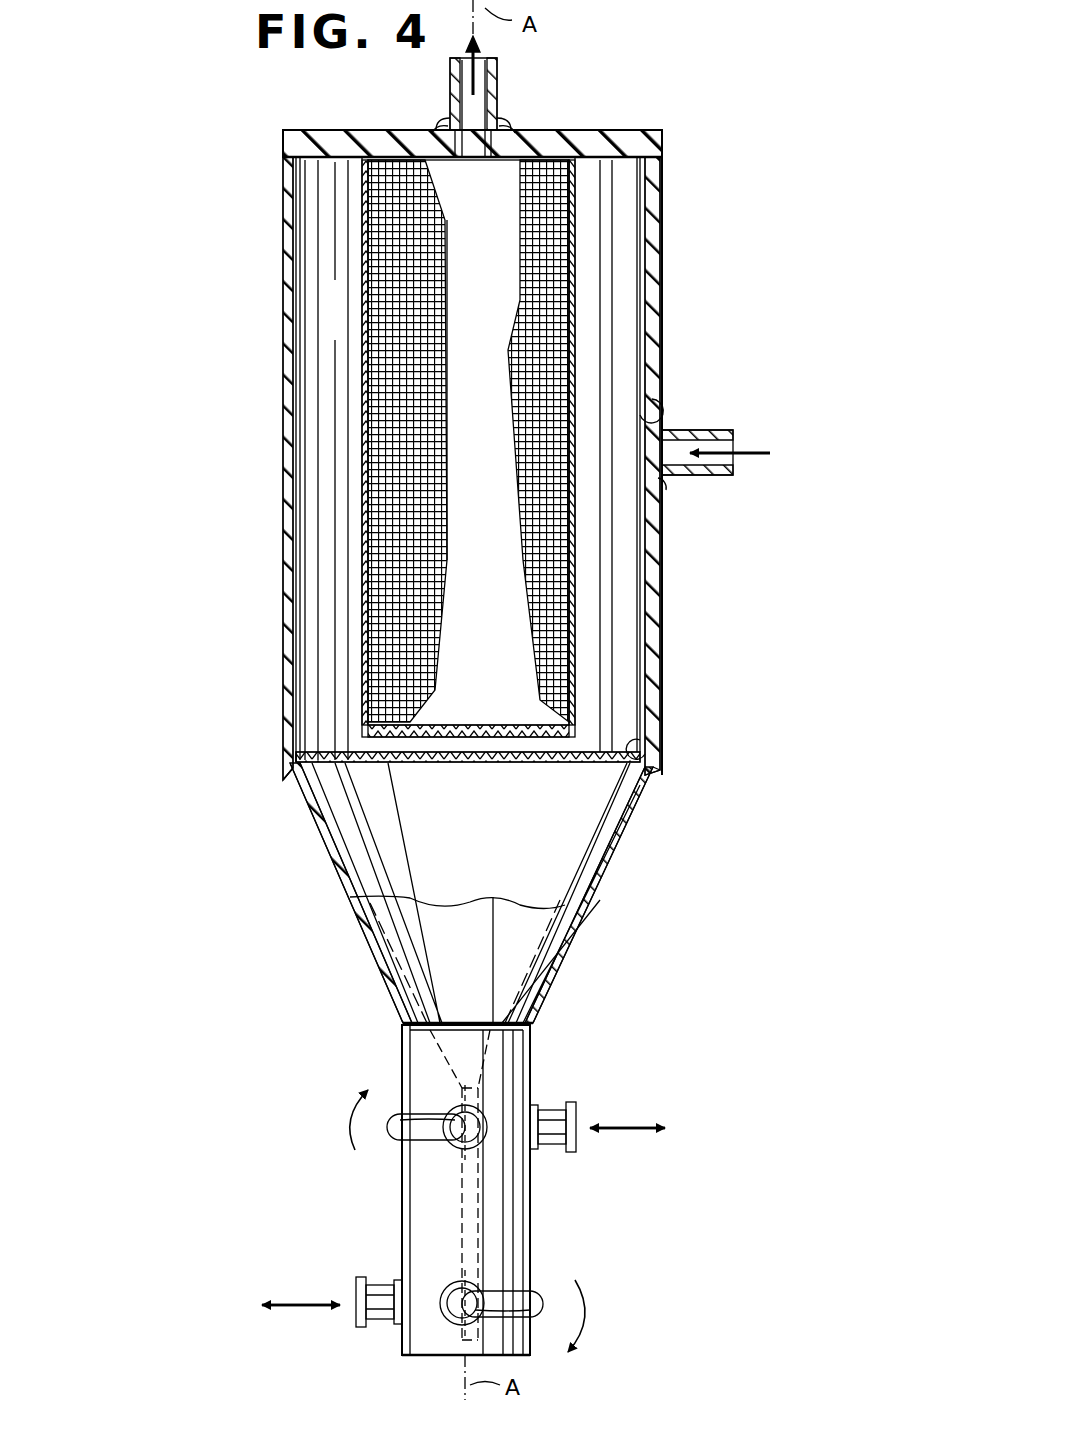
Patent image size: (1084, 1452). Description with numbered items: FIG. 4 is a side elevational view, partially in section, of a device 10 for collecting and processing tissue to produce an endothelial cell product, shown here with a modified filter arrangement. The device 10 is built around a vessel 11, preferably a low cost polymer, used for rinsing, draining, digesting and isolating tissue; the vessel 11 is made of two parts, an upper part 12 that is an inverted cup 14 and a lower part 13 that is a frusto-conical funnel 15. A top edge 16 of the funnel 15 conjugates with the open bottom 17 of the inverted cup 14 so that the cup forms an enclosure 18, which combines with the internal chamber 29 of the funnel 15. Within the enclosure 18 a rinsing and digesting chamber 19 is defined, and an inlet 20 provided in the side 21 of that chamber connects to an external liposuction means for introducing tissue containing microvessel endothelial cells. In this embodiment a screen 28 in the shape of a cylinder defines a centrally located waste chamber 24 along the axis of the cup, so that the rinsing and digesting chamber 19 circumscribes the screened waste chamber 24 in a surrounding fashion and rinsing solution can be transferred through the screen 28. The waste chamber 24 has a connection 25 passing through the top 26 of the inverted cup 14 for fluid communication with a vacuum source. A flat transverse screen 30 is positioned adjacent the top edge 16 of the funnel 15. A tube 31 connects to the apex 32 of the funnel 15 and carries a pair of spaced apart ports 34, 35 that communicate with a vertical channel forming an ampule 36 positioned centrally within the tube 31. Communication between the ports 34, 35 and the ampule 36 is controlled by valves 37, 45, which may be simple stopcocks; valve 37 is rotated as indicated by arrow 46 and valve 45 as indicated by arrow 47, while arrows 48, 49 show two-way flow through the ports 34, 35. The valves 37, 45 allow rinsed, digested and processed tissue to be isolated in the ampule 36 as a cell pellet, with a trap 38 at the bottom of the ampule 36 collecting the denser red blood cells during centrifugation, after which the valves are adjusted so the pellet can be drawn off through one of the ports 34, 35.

The device 10 is at (685, 112).
The vessel 11 is at (660, 640).
The upper part 12 is at (662, 258).
The lower part 13 is at (640, 822).
The inverted cup 14 is at (286, 187).
The frusto-conical funnel 15 is at (407, 948).
The top edge 16 is at (650, 730).
The open bottom 17 is at (288, 772).
The enclosure 18 is at (327, 460).
The rinsing and digesting chamber 19 is at (330, 368).
The inlet 20 is at (715, 430).
The side 21 is at (652, 392).
The waste chamber 24 is at (468, 447).
The connection 25 is at (497, 92).
The top 26 is at (372, 134).
The screen 28 is at (372, 530).
The internal chamber 29 is at (481, 893).
The flat transverse screen 30 is at (350, 758).
The tube 31 is at (533, 1068).
The apex 32 is at (533, 1025).
The port 34 is at (576, 1104).
The port 35 is at (358, 1328).
The ampule 36 is at (483, 1210).
The valve 37 is at (400, 1150).
The trap 38 is at (425, 1362).
The valve 45 is at (520, 1300).
The arrow 46 is at (345, 1132).
The arrow 47 is at (590, 1318).
The arrow 48 is at (620, 1125).
The arrow 49 is at (310, 1303).